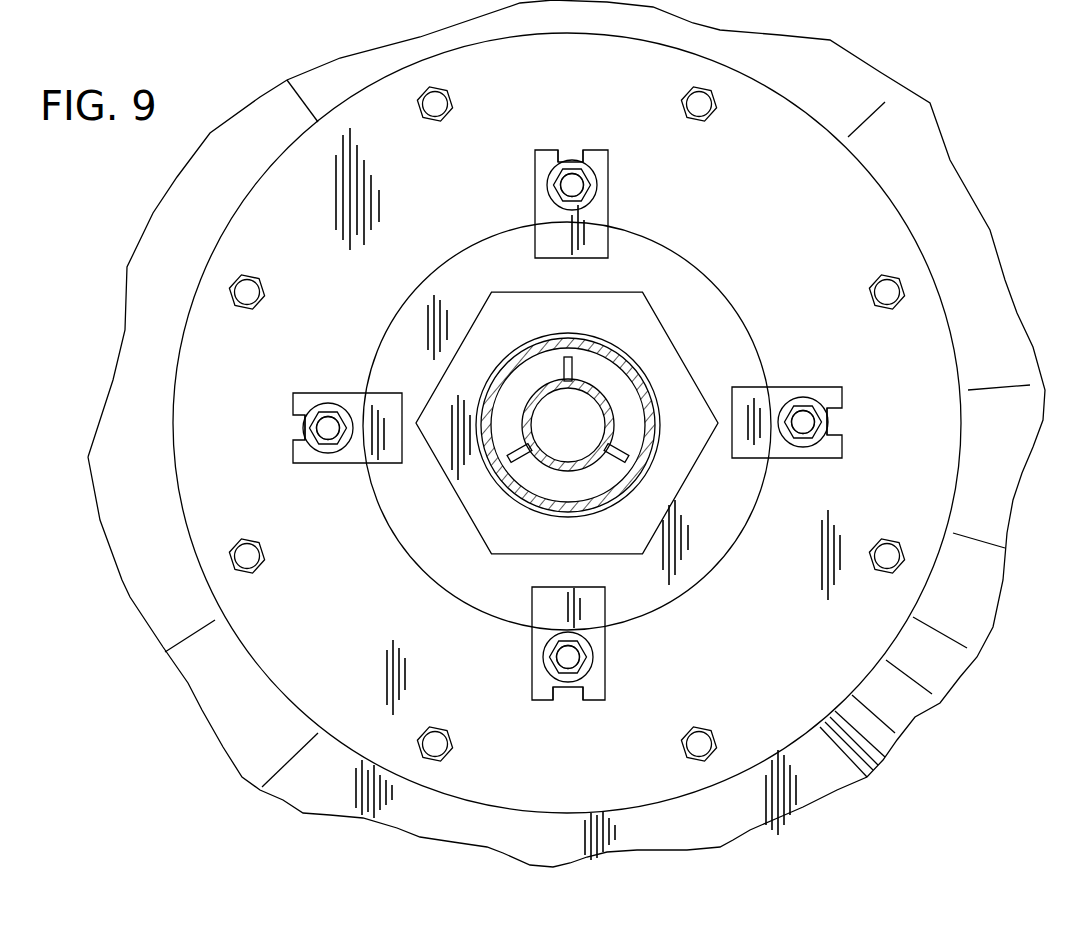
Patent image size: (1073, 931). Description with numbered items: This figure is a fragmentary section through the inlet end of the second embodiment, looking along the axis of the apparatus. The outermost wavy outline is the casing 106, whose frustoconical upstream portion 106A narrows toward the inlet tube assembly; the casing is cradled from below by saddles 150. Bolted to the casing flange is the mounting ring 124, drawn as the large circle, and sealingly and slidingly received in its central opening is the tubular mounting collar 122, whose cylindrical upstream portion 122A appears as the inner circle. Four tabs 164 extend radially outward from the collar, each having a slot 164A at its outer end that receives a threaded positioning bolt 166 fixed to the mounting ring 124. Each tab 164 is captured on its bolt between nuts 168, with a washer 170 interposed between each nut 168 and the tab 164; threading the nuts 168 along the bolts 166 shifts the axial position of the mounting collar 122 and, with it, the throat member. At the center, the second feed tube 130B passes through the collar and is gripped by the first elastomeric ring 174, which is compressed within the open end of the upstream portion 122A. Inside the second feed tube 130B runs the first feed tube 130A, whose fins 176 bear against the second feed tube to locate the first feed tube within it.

The casing 106 is at (874, 79).
The upstream portion of the casing 106A is at (203, 688).
The mounting collar 122 is at (410, 568).
The upstream portion of the mounting collar 122A is at (713, 542).
The mounting ring 124 is at (885, 213).
The first feed tube 130A is at (592, 372).
The second feed tube 130B is at (632, 389).
The saddles 150 is at (288, 788).
The tabs 164 is at (602, 216).
The slot 164A is at (578, 150).
The positioning bolts 166 is at (590, 178).
The nuts 168 is at (570, 186).
The washer 170 is at (568, 158).
The first elastomeric ring 174 is at (650, 468).
The fins 176 is at (580, 370).